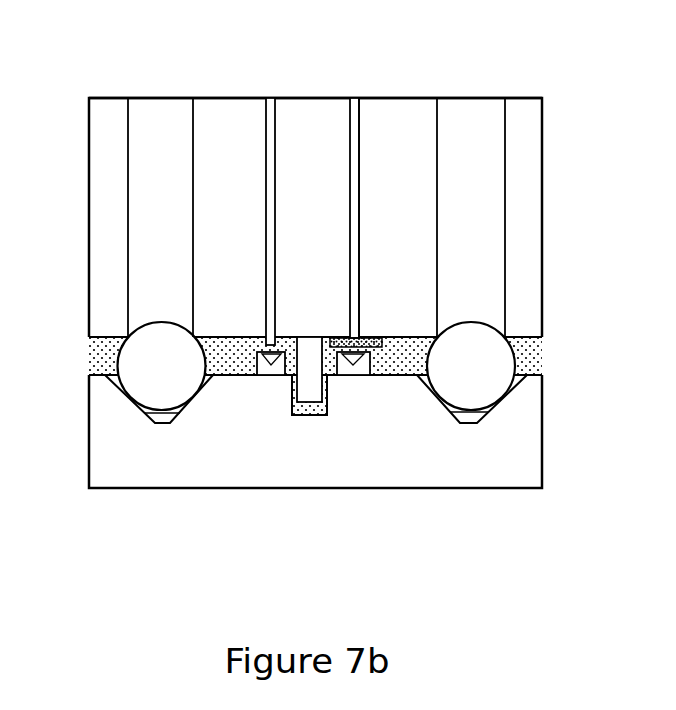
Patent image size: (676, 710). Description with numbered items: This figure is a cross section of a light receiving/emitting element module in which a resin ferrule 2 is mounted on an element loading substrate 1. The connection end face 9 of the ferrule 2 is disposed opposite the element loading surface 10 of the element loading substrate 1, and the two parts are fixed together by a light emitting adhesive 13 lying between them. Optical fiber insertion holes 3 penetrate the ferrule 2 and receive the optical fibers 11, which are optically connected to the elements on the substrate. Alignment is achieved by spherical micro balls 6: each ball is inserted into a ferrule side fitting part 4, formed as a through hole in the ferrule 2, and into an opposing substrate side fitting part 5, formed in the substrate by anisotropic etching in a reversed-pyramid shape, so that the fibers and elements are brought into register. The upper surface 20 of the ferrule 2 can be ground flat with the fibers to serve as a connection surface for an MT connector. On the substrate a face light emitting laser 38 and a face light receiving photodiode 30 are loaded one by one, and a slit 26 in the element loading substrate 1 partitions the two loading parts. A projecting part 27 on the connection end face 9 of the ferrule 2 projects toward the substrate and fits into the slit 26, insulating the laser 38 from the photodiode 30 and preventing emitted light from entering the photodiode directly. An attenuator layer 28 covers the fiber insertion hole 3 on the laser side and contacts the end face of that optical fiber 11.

The element loading substrate 1 is at (450, 467).
The ferrule 2 is at (525, 127).
The optical fiber insertion holes 3 is at (263, 187).
The ferrule side fitting parts 4 is at (150, 218).
The substrate side fitting parts 5 is at (130, 400).
The micro balls 6 is at (160, 352).
The connection end face 9 is at (90, 345).
The element loading surface 10 is at (90, 372).
The optical fibers 11 is at (358, 141).
The light emitting adhesive 13 is at (90, 362).
The upper surface 20 is at (520, 98).
The slit 26 is at (302, 415).
The projecting part 27 is at (312, 415).
The attenuator layer 28 is at (372, 340).
The face light receiving photodiode 30 is at (268, 378).
The face light emitting laser 38 is at (355, 378).